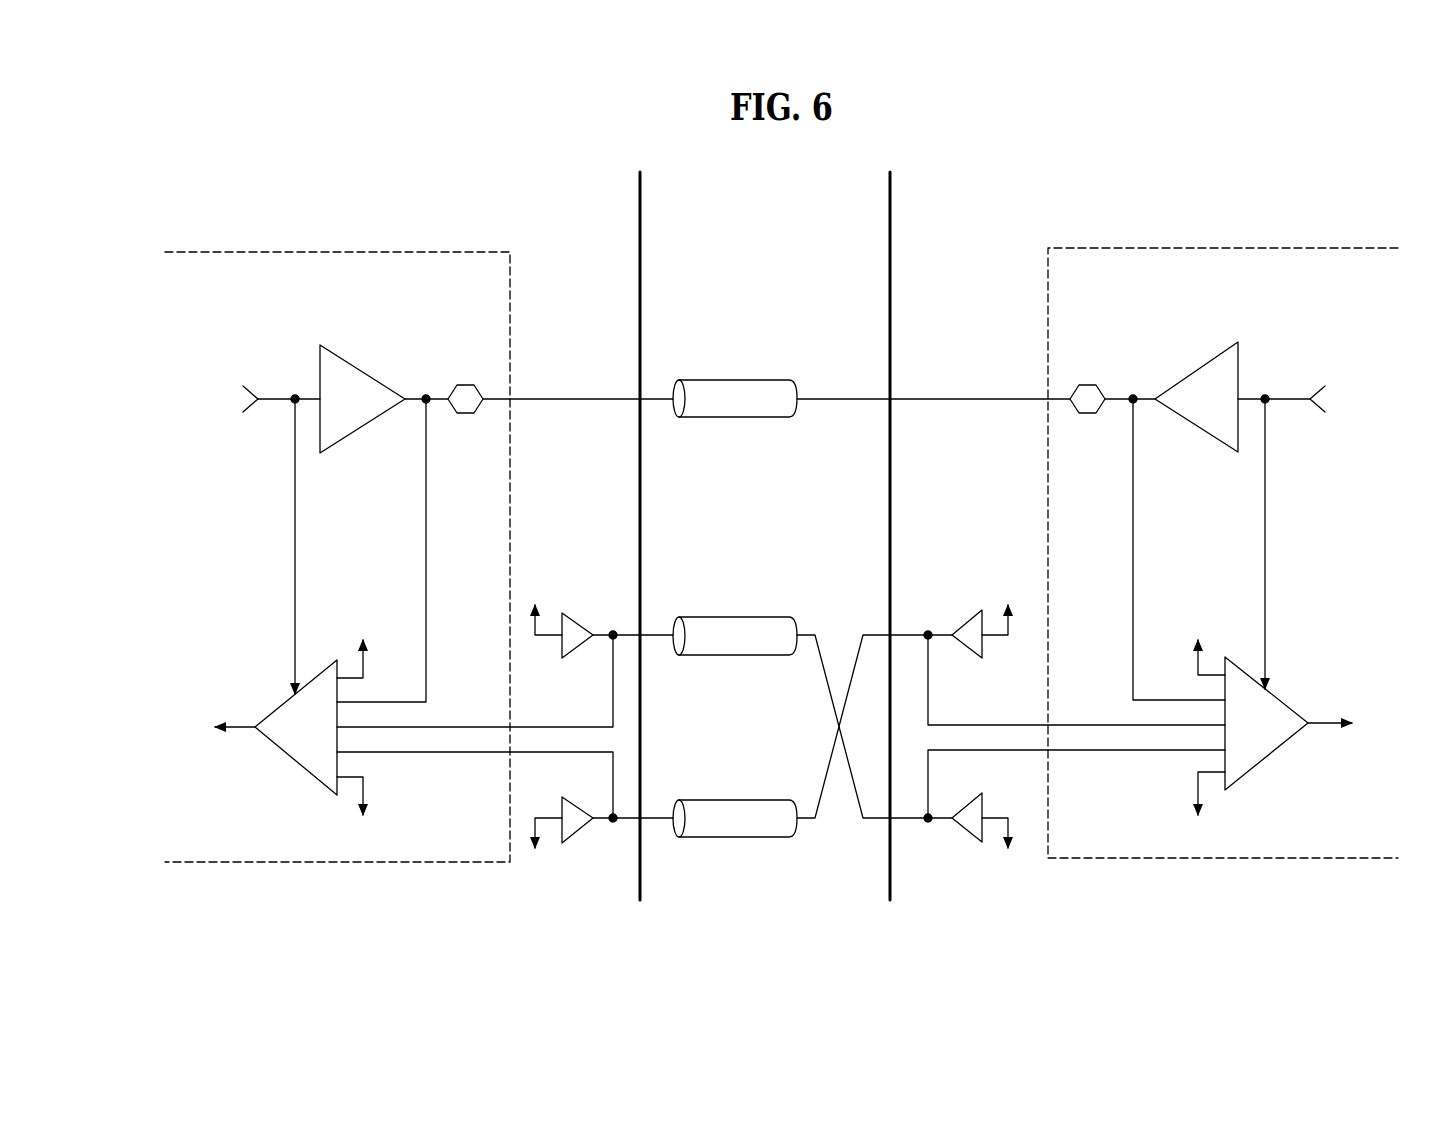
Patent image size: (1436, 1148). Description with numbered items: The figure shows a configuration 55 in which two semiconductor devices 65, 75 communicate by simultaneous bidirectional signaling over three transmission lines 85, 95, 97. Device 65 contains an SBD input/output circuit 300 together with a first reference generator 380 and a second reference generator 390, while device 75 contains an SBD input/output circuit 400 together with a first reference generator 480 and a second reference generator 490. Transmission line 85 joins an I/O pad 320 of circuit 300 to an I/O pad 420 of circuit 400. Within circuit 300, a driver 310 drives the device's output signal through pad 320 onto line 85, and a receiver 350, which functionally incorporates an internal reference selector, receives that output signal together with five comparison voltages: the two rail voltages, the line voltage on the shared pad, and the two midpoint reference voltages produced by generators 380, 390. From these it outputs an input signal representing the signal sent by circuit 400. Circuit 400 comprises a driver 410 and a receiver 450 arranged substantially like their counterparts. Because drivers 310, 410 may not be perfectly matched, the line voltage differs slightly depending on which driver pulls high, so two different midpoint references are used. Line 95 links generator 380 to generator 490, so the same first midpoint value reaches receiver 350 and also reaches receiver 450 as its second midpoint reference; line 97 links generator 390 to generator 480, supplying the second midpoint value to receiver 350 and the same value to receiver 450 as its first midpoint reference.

The configuration 55 is at (1312, 176).
The semiconductor device 65 is at (406, 232).
The semiconductor device 75 is at (1188, 231).
The transmission line 85 is at (737, 380).
The transmission line 95 is at (737, 615).
The transmission line 97 is at (737, 800).
The SBD input/output circuit 300 is at (257, 312).
The driver 310 is at (363, 370).
The I/O pad 320 is at (465, 383).
The receiver 350 is at (295, 767).
The VREFM1-1 generator 380 is at (578, 622).
The VREFM2-1 generator 390 is at (588, 833).
The SBD input/output circuit 400 is at (1352, 307).
The driver 410 is at (1195, 367).
The I/O pad 420 is at (1088, 383).
The receiver 450 is at (1267, 758).
The VREFM1-2 generator 480 is at (963, 620).
The VREFM2-2 generator 490 is at (963, 830).